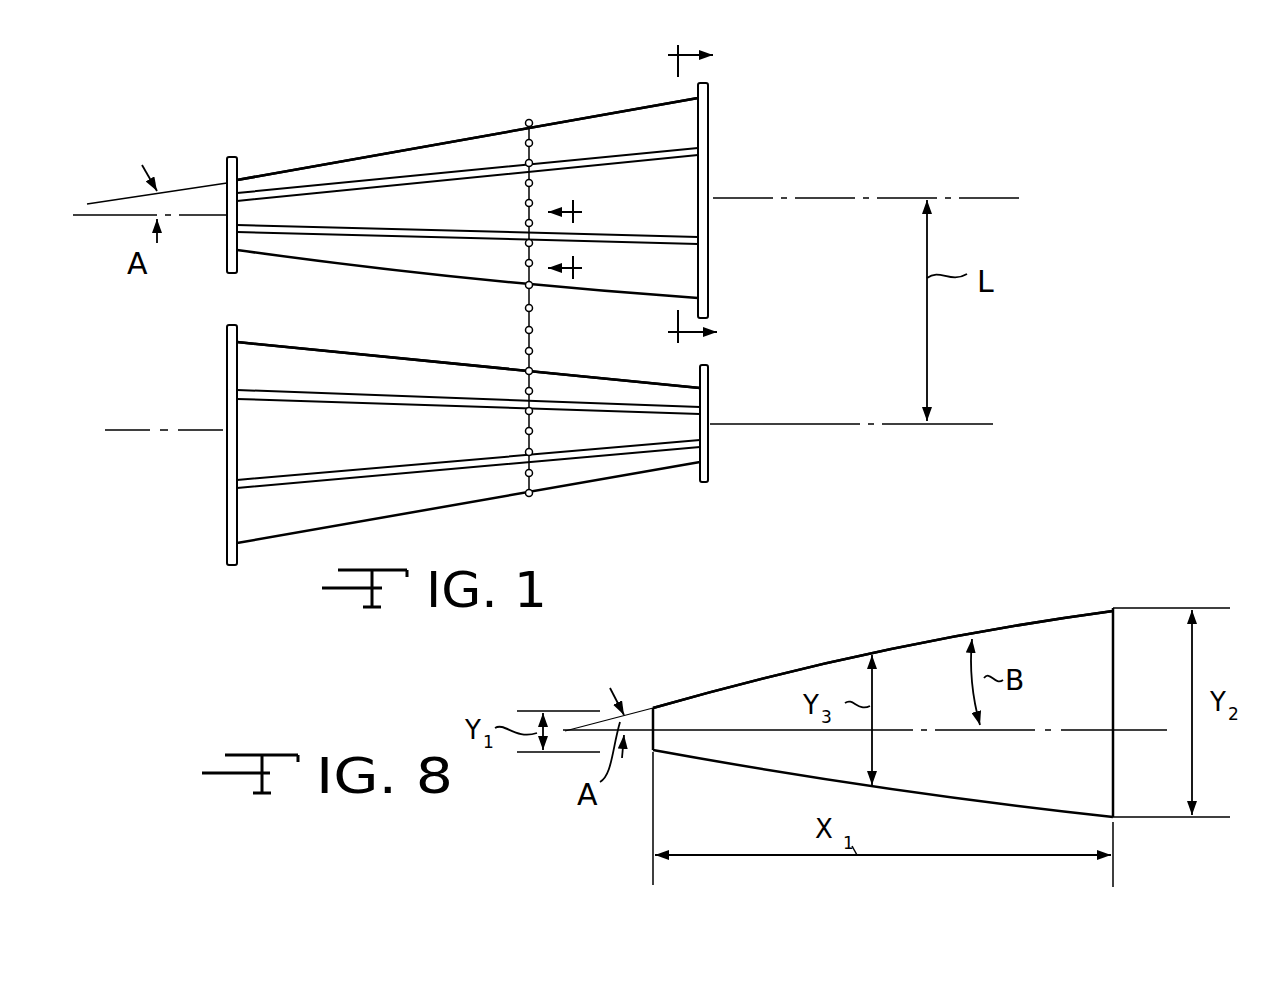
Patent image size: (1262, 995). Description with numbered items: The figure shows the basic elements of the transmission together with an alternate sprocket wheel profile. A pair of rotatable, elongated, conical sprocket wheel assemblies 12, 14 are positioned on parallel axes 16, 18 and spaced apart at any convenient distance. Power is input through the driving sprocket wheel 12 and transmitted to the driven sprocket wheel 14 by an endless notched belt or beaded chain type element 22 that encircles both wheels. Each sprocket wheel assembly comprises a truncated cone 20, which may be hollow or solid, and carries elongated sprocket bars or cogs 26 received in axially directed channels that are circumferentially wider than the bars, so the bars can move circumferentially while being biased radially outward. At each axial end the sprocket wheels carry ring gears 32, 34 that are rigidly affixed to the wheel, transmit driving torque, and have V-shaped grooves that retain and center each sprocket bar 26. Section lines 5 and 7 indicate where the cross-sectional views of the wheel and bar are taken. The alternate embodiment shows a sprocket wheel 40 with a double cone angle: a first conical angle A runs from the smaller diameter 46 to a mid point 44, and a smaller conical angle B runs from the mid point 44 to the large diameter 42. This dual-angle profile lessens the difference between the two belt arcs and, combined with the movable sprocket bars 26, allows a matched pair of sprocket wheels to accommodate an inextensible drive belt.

In FIG. 1, the section line 5- 5 is at (709, 193).
In FIG. 1, the section line 7- 7 is at (576, 230).
In FIG. 1, the conical sprocket wheel assembly 12 is at (642, 100).
In FIG. 1, the conical sprocket wheel assembly 14 is at (607, 480).
In FIG. 1, the axis 16 is at (802, 197).
In FIG. 1, the axis 18 is at (807, 423).
In FIG. 1, the truncated cone 20 is at (682, 125).
In FIG. 1, the endless belt or beaded chain assembly element 22 is at (541, 316).
In FIG. 1, the sprocket bar 26 is at (393, 180).
In FIG. 1, the ring gear 32 is at (707, 273).
In FIG. 1, the ring gear 34 is at (237, 163).
In FIG. 8, the sprocket wheel 40 is at (933, 636).
In FIG. 8, the large diameter 42 is at (1112, 607).
In FIG. 8, the mid point 44 is at (872, 652).
In FIG. 8, the smaller diameter 46 is at (648, 752).